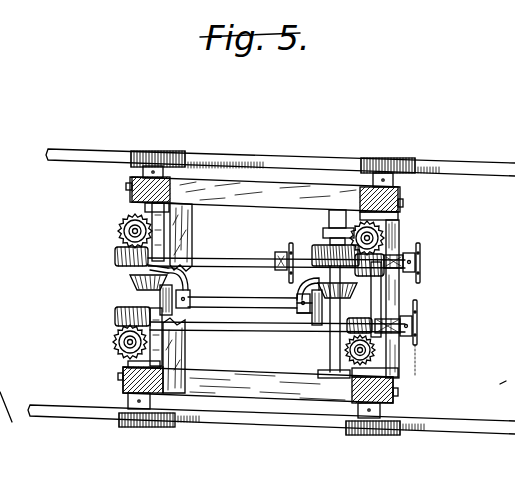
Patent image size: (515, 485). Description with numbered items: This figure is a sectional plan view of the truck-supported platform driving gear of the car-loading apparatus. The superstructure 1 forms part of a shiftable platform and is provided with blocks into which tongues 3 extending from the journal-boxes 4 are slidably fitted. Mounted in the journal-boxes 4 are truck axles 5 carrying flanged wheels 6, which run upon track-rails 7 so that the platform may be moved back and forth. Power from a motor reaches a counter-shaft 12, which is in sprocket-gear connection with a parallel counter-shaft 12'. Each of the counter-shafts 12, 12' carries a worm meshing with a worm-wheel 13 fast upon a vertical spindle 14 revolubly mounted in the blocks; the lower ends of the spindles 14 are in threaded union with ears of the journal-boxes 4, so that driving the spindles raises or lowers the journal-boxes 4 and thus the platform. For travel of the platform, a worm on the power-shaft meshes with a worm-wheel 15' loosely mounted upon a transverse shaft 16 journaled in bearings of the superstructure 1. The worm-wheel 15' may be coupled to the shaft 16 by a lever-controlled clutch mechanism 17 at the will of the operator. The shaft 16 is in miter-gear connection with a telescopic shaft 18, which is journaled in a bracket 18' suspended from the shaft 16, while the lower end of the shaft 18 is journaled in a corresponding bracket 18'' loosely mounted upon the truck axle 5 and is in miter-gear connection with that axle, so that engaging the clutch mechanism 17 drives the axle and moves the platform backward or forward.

The superstructure 1 is at (133, 180).
The tongues 3 is at (130, 203).
The journal-boxes 4 is at (506, 381).
The truck axles 5 is at (381, 300).
The flanged wheels 6 is at (170, 151).
The track-rails 7 is at (79, 151).
The counter-shaft 12 is at (299, 263).
The parallel counter-shaft 12' is at (304, 337).
The worm-wheels 13 is at (122, 223).
The vertical spindles 14 is at (123, 233).
The worm-wheel 15' is at (327, 246).
The transverse shaft 16 is at (325, 355).
The lever-controlled clutch mechanism 17 is at (327, 230).
The telescopic shaft 18 is at (243, 300).
The bracket 18' is at (303, 303).
The bracket 18'' is at (185, 286).